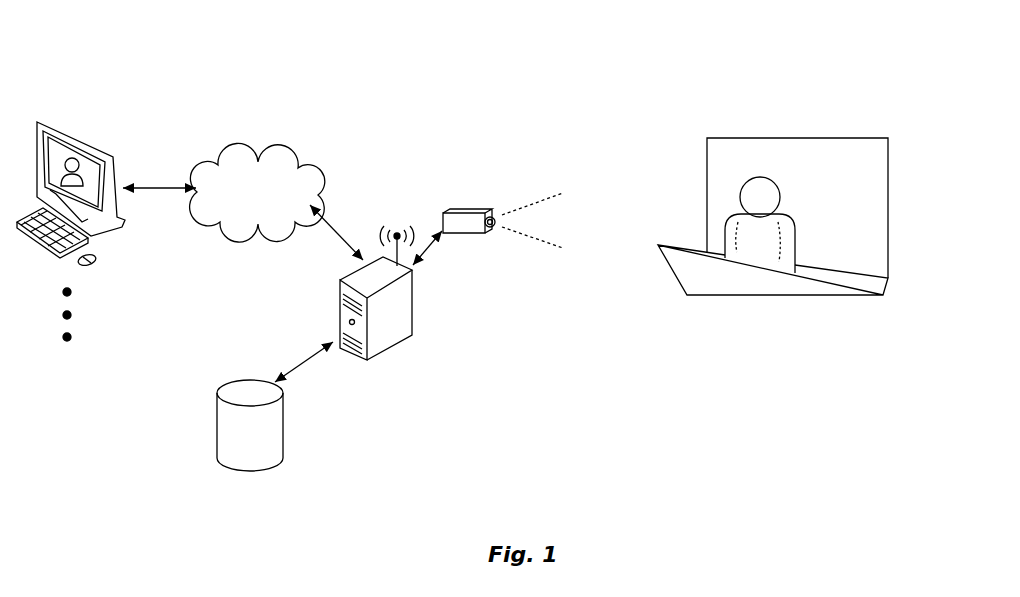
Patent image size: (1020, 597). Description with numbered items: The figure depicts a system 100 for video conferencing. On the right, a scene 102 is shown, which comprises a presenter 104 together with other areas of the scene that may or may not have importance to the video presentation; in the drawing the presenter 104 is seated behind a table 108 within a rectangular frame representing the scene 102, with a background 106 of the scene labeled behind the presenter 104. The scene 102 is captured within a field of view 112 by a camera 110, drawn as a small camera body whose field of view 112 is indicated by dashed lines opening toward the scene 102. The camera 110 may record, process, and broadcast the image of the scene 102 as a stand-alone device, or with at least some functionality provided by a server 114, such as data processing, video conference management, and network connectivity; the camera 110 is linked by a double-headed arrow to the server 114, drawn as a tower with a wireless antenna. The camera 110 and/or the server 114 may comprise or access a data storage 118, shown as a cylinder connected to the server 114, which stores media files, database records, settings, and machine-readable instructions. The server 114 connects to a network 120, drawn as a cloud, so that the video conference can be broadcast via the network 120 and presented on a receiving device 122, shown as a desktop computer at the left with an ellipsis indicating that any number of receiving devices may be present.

The system 100 is at (815, 51).
The scene 102 is at (831, 125).
The presenter 104 is at (765, 238).
The background 106 is at (852, 220).
The table 108 is at (748, 283).
The camera 110 is at (470, 233).
The field of view 112 is at (566, 262).
The server 114 is at (410, 337).
The data storage 118 is at (288, 427).
The network 120 is at (313, 175).
The receiving device 122 is at (98, 143).